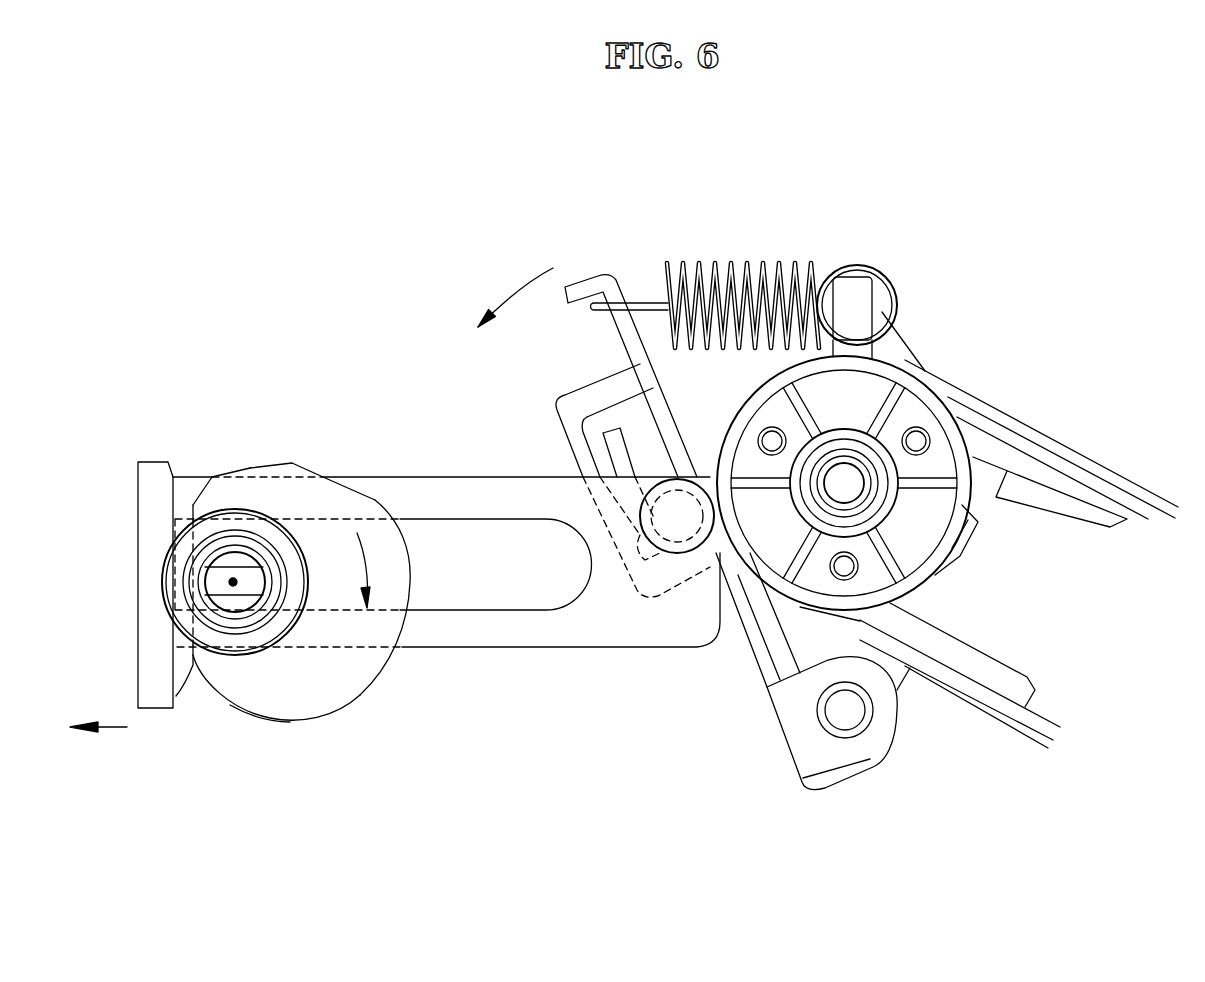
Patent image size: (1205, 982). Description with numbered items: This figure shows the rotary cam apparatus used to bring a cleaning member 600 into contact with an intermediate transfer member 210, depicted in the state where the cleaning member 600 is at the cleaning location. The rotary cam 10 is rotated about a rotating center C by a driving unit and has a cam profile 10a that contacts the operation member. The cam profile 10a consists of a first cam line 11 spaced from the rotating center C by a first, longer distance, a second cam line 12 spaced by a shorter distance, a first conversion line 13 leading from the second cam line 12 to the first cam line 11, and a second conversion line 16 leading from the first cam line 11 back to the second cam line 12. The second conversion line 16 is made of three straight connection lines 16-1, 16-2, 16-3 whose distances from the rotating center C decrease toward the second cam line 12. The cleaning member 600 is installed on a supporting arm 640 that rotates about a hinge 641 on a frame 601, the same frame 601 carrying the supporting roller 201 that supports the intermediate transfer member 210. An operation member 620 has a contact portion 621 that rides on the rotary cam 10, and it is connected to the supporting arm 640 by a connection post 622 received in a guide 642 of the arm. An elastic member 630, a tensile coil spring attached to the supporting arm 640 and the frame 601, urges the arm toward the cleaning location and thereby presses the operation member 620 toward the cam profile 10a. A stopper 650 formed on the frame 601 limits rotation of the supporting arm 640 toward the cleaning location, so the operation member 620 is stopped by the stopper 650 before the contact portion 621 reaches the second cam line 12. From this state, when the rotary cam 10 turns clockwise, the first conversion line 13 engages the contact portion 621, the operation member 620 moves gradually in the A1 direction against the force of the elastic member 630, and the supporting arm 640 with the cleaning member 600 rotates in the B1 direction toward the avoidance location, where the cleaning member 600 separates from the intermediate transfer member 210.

The rotary cam 10 is at (367, 713).
The cam profile 10a is at (316, 725).
The first cam line 11 is at (410, 583).
The second cam line 12 is at (192, 512).
The first conversion line 13 is at (252, 718).
The second conversion line 16 is at (271, 425).
The first connection line 16-1 is at (335, 448).
The second connection line 16-2 is at (250, 468).
The third connection line 16-3 is at (200, 487).
The rotating center C is at (233, 582).
The supporting roller 201 is at (911, 415).
The intermediate transfer member 210 is at (1066, 450).
The cleaning member 600 is at (763, 610).
The frame 601 is at (1004, 409).
The operation member 620 is at (488, 648).
The contact portion 621 is at (155, 708).
The connection post 622 is at (675, 522).
The elastic member 630 is at (748, 262).
The supporting arm 640 is at (753, 667).
The hinge 641 is at (847, 722).
The guide 642 is at (633, 440).
The stopper 650 is at (705, 435).
The A1 direction A1 is at (95, 711).
The B1 direction B1 is at (515, 295).